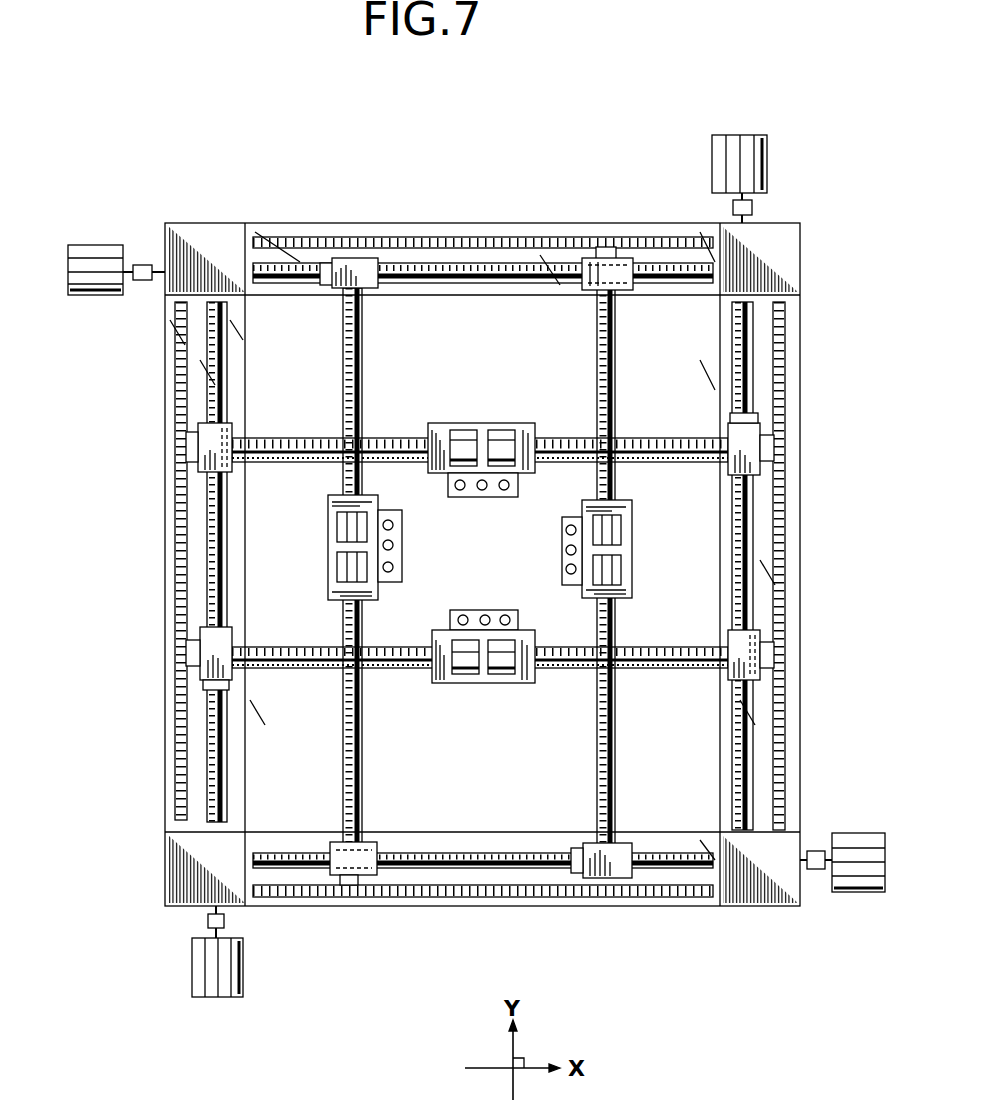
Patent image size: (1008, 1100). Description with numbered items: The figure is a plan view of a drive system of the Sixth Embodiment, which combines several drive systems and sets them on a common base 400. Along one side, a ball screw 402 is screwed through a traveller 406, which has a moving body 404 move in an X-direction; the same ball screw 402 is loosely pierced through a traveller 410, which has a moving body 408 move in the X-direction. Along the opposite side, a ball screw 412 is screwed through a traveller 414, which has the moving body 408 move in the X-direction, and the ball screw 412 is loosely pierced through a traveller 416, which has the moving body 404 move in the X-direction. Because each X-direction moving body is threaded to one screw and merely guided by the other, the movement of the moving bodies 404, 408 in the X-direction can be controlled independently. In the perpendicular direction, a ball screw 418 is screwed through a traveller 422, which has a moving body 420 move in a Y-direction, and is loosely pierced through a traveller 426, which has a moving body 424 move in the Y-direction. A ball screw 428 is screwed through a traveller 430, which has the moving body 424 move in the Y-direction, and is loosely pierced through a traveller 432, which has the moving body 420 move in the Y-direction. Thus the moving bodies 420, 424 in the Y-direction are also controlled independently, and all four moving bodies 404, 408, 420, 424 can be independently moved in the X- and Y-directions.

The base 400 is at (800, 607).
The ball screw 402 is at (447, 270).
The moving body 404 is at (337, 545).
The traveller 406 is at (363, 267).
The moving body 408 is at (623, 557).
The traveller 410 is at (612, 278).
The ball screw 412 is at (432, 863).
The traveller 414 is at (622, 862).
The traveller 416 is at (333, 875).
The ball screw 418 is at (750, 543).
The moving body 420 is at (492, 433).
The traveller 422 is at (745, 438).
The moving body 424 is at (485, 677).
The traveller 426 is at (757, 682).
The ball screw 428 is at (203, 765).
The traveller 430 is at (210, 643).
The traveller 432 is at (207, 437).